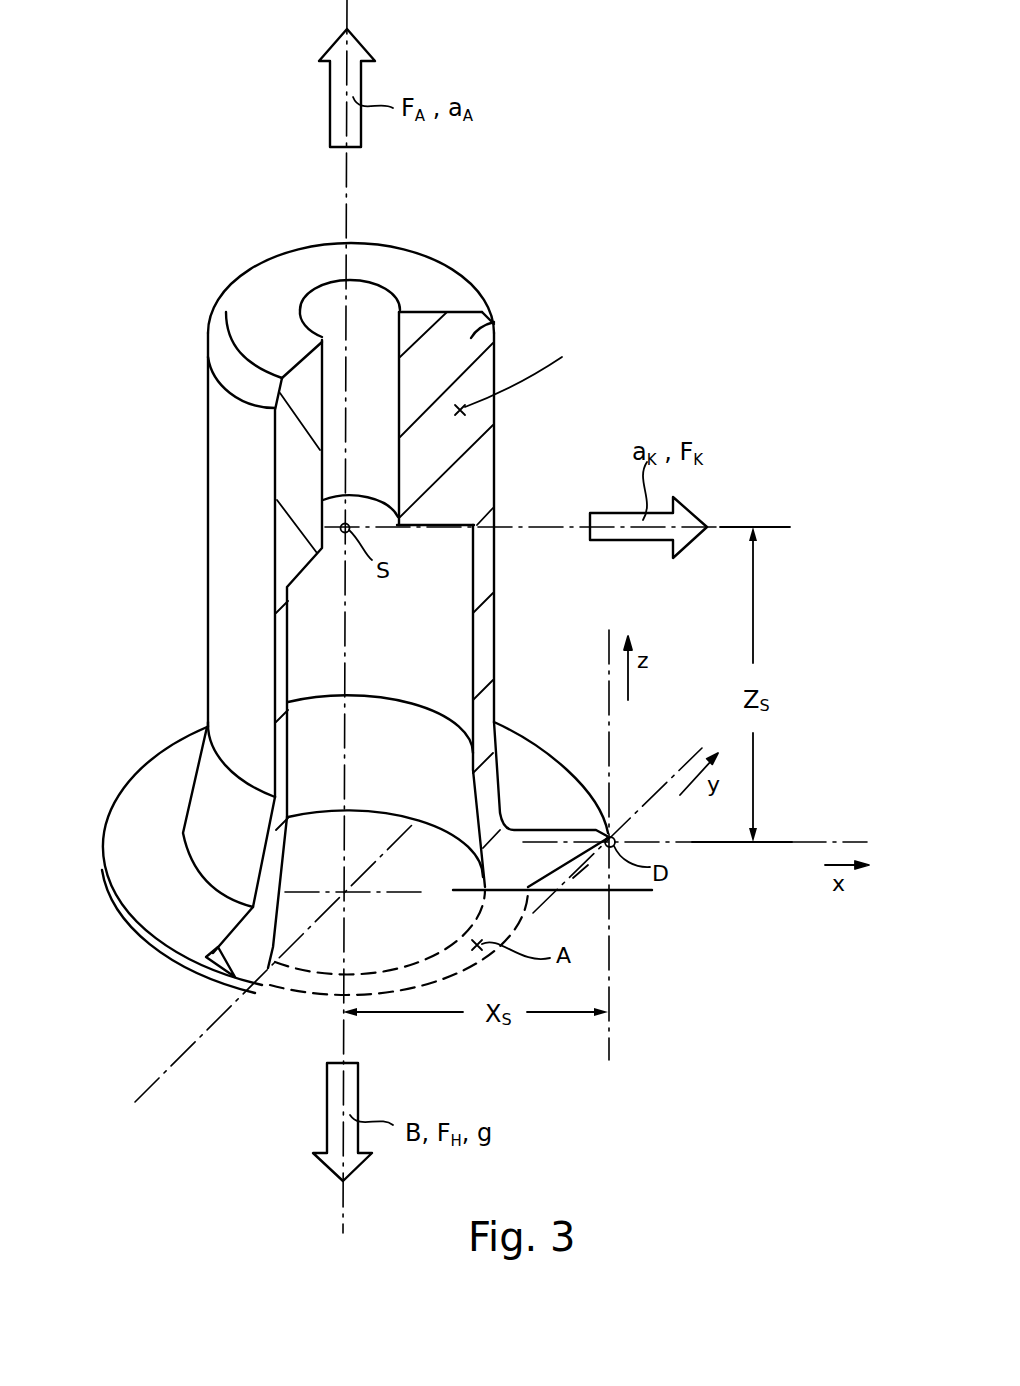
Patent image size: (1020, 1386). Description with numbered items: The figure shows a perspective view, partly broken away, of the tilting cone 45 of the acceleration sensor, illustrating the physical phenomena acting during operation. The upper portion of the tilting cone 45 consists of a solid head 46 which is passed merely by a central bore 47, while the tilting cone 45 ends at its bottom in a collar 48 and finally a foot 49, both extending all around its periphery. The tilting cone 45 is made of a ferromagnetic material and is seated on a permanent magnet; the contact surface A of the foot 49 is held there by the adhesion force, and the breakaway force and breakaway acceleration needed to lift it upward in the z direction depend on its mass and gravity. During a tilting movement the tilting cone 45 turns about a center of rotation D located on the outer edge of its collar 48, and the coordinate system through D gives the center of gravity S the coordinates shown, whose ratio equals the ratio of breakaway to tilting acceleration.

The tilting cone 45 is at (537, 235).
The solid head 46 is at (490, 323).
The central bore 47 is at (381, 330).
The collar 48 is at (153, 787).
The foot 49 is at (268, 985).